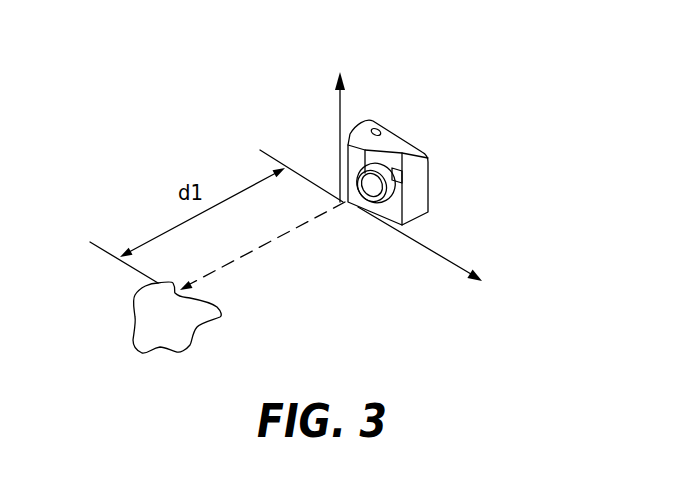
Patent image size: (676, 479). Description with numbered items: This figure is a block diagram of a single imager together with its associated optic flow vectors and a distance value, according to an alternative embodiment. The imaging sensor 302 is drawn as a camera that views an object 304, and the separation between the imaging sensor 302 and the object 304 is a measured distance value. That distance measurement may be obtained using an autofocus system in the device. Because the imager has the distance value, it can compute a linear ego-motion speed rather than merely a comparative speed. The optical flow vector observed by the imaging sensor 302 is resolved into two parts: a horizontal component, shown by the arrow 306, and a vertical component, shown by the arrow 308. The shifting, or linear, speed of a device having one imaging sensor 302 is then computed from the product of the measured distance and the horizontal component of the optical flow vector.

The imaging sensor 302 is at (393, 141).
The object 304 is at (147, 330).
The arrow (horizontal component x1) 306 is at (430, 250).
The arrow (vertical component y1) 308 is at (339, 108).